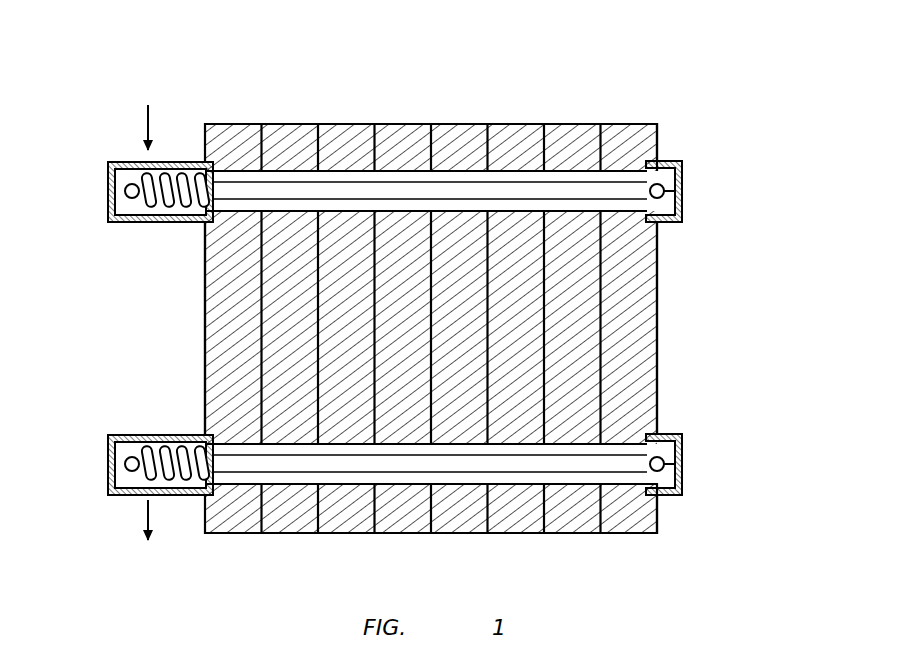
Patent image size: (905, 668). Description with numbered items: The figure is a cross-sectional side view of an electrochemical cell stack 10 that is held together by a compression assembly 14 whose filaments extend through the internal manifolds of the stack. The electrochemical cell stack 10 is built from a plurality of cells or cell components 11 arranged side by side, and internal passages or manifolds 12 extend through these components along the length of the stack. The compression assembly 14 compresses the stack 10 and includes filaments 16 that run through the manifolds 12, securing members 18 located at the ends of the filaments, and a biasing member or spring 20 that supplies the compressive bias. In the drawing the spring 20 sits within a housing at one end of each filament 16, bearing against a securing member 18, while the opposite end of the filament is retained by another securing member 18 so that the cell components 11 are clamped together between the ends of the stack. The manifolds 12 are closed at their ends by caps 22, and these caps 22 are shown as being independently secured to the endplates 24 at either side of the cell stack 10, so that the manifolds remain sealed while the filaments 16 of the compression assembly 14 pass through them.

The electrochemical cell stack 10 is at (730, 86).
The cell components 11 is at (290, 124).
The manifolds 12 is at (621, 168).
The compression assembly 14 is at (135, 232).
The filaments 16 is at (232, 180).
The securing members 18 is at (125, 190).
The spring 20 is at (165, 172).
The caps 22 is at (108, 165).
The endplates 24 is at (205, 340).